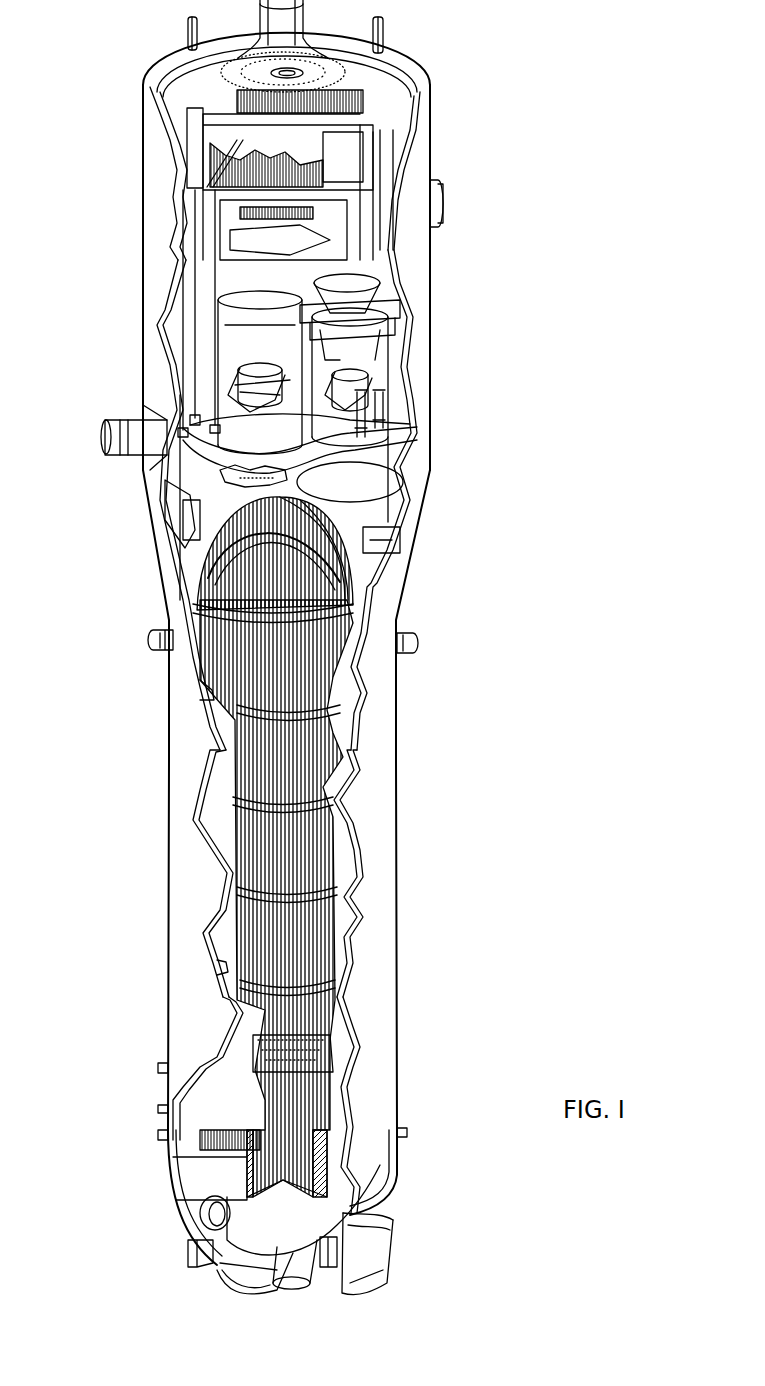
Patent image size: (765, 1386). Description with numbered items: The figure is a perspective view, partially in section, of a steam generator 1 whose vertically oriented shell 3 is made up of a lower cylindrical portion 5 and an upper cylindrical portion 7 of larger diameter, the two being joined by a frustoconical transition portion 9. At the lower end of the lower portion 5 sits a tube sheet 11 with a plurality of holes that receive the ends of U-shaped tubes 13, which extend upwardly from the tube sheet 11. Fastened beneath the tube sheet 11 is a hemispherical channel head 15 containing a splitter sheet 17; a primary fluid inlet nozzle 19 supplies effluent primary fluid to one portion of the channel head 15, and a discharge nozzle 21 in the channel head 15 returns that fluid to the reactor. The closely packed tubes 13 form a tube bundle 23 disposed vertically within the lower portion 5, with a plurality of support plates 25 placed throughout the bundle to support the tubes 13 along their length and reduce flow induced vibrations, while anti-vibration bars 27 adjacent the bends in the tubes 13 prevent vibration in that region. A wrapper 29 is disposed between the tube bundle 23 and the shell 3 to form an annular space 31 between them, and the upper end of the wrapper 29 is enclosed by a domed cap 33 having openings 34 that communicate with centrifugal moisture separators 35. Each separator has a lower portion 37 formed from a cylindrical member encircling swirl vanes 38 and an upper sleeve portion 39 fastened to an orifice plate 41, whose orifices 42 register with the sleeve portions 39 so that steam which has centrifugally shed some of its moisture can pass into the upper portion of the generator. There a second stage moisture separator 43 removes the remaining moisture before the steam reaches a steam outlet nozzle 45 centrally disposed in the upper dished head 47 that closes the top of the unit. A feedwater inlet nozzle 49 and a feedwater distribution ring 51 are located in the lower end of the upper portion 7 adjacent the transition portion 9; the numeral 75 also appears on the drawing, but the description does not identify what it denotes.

The steam generator 1 is at (173, 878).
The shell 3 is at (177, 942).
The lower cylindrical portion 5 is at (177, 797).
The upper cylindrical portion 7 is at (153, 210).
The frustoconical transition portion 9 is at (157, 547).
The tube sheet 11 is at (197, 1163).
The U-shaped tubes 13 is at (310, 863).
The hemispherical channel head 15 is at (377, 1213).
The splitter sheet 17 is at (293, 1232).
The primary fluid inlet nozzle 19 is at (232, 1277).
The discharge nozzle 21 is at (380, 1267).
The tube bundle 23 is at (317, 817).
The support plates 25 is at (320, 780).
The anti-vibration bars 27 is at (340, 590).
The wrapper 29 is at (217, 1000).
The annular space 31 is at (180, 1103).
The domed cap 33 is at (187, 525).
The openings 34 is at (190, 523).
The centrifugal moisture separators 35 is at (390, 417).
The lower portion 37 is at (233, 398).
The swirl vanes 38 is at (233, 378).
The upper sleeve portion 39 is at (377, 330).
The orifice plate 41 is at (400, 300).
The orifices 42 is at (360, 287).
The second stage moisture separator 43 is at (350, 160).
The steam outlet nozzle 45 is at (317, 35).
The upper dished head 47 is at (407, 77).
The feedwater inlet nozzle 49 is at (127, 453).
The feedwater distribution ring 51 is at (393, 440).
The thermal shield supports 75 is at (200, 687).